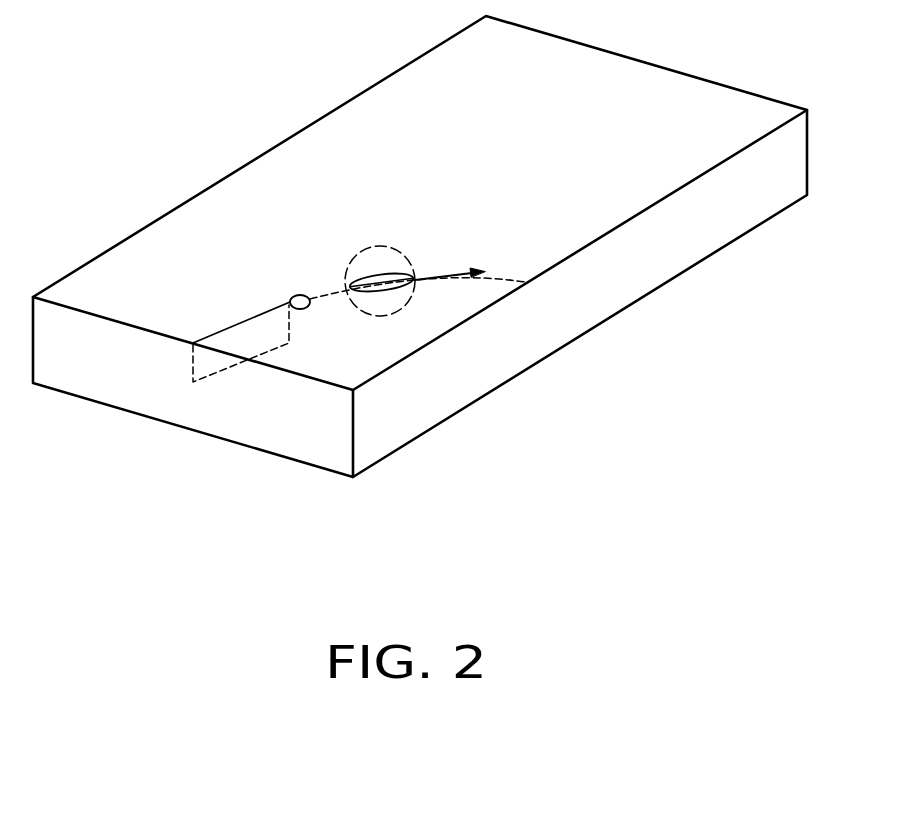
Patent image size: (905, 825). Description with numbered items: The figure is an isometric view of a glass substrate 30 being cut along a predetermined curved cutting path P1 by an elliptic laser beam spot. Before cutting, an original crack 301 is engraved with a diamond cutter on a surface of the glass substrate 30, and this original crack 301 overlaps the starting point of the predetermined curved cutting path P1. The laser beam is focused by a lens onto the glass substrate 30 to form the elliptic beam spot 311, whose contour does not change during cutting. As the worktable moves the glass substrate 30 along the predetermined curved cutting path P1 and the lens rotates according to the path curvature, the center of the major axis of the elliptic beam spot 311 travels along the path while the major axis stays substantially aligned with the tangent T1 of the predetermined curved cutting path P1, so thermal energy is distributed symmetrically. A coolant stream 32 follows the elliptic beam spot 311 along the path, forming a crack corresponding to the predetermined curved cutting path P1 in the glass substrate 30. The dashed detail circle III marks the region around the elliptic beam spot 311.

The glass substrate 30 is at (715, 220).
The original crack 301 is at (192, 365).
The coolant stream 32 is at (291, 298).
The elliptic beam spot 311 is at (380, 274).
The predetermined curved cutting path P1 is at (333, 290).
The tangent of the predetermined curved cutting path T1 is at (455, 261).
The detail region circle III is at (403, 308).